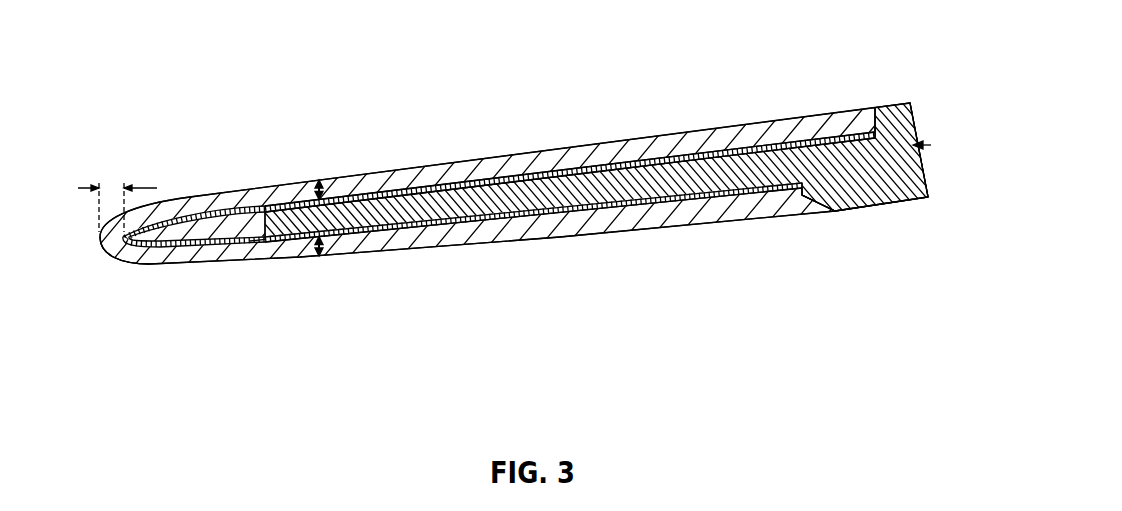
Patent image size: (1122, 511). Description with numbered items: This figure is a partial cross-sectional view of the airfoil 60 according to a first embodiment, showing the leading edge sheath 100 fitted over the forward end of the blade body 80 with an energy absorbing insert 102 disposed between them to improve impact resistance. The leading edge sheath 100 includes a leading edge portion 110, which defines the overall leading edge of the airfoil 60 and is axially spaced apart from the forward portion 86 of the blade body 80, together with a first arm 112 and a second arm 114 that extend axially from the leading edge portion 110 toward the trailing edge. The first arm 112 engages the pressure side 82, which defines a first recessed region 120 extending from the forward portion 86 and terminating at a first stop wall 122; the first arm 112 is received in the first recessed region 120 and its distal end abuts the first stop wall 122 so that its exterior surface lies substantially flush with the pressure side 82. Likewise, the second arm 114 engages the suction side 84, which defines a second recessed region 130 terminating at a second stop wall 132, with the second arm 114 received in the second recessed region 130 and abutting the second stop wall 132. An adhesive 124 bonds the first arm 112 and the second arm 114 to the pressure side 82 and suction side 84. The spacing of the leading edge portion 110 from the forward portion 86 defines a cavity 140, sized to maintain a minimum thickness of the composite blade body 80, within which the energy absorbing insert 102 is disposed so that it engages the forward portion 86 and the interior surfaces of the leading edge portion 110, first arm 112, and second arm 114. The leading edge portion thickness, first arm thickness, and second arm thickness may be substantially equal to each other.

The airfoil 60 is at (763, 54).
The blade body 80 is at (929, 178).
The pressure side 82 is at (879, 107).
The suction side 84 is at (861, 207).
The forward portion 86 is at (264, 213).
The leading edge sheath 100 is at (161, 185).
The energy absorbing insert 102 is at (152, 241).
The leading edge portion 110 is at (113, 254).
The first arm 112 is at (433, 175).
The second arm 114 is at (540, 236).
The first recessed region 120 is at (630, 160).
The first stop wall 122 is at (910, 103).
The adhesive 124 is at (500, 177).
The second recessed region 130 is at (616, 228).
The second stop wall 132 is at (837, 212).
The cavity 140 is at (257, 245).